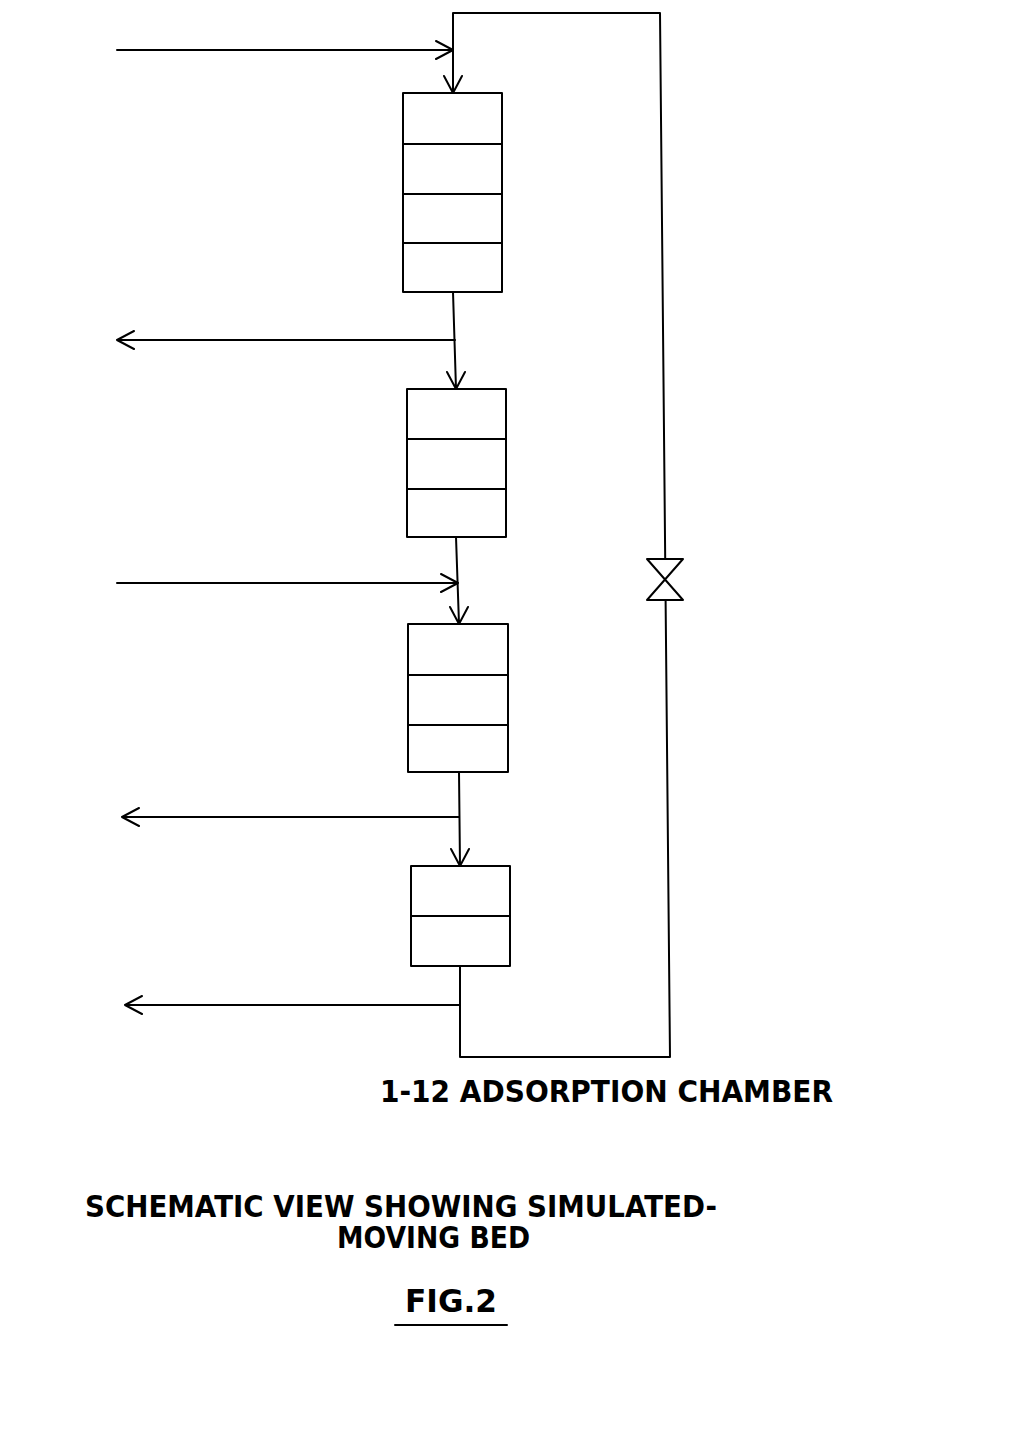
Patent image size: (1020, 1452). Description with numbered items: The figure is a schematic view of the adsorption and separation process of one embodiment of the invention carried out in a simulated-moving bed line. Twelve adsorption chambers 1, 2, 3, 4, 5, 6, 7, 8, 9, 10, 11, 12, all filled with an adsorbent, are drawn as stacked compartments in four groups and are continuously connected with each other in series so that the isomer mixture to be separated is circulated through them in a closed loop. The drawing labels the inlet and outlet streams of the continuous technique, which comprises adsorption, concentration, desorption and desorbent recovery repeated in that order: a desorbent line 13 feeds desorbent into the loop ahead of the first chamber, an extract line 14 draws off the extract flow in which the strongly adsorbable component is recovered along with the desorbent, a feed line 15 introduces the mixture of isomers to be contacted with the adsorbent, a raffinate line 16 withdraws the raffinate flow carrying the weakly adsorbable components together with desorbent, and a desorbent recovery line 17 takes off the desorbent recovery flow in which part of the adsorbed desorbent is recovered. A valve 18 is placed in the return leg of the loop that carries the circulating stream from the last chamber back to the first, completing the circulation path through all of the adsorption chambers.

The adsorption chamber 1 is at (492, 131).
The adsorption chamber 2 is at (492, 181).
The adsorption chamber 3 is at (492, 231).
The adsorption chamber 4 is at (492, 279).
The adsorption chamber 5 is at (497, 427).
The adsorption chamber 6 is at (497, 470).
The adsorption chamber 7 is at (497, 522).
The adsorption chamber 8 is at (499, 660).
The adsorption chamber 9 is at (499, 710).
The adsorption chamber 10 is at (499, 755).
The adsorption chamber 11 is at (502, 903).
The adsorption chamber 12 is at (502, 947).
The desorbent line 13 is at (285, 51).
The extract line 14 is at (285, 342).
The feed line 15 is at (290, 585).
The raffinate line 16 is at (289, 819).
The desorbent recovery line 17 is at (294, 1007).
The valve 18 is at (720, 577).